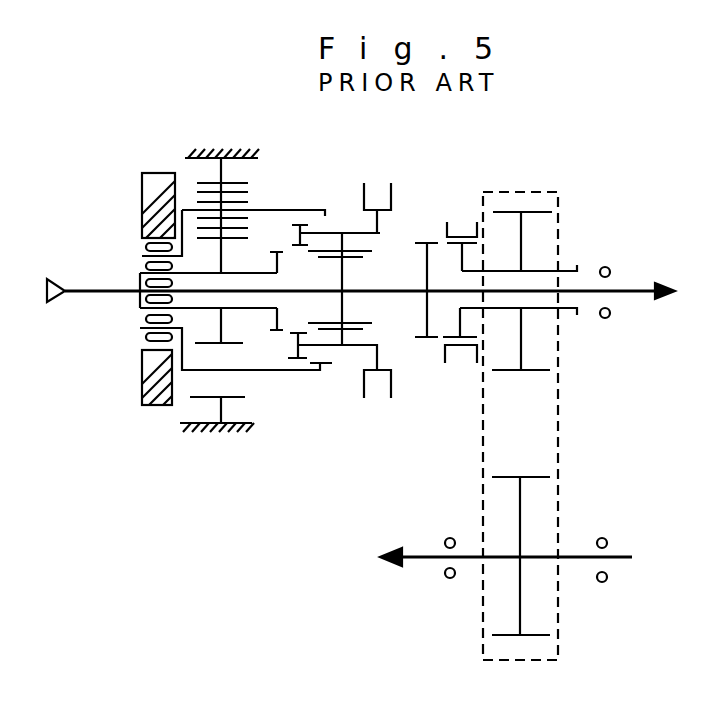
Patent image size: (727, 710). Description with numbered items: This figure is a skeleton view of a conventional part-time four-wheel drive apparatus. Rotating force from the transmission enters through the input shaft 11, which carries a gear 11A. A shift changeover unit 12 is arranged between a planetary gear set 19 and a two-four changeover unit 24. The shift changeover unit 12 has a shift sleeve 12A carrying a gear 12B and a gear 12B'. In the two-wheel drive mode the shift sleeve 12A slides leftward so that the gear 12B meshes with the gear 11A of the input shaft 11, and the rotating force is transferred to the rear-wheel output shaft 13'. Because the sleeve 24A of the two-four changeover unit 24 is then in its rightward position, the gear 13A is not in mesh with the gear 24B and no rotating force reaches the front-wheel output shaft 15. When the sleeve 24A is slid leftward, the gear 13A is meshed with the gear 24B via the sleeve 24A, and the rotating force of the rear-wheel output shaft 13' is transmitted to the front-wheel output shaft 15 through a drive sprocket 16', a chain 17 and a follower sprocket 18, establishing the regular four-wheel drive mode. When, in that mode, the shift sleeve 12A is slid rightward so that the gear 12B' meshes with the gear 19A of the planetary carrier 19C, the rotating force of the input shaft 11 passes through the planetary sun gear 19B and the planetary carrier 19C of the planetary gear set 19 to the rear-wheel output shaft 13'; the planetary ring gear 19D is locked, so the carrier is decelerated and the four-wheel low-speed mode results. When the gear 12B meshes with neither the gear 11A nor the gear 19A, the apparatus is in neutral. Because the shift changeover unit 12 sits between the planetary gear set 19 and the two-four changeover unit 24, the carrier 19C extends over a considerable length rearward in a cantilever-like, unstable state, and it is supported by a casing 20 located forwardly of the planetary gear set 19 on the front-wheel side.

The input shaft 11 is at (99, 287).
The gear of the input shaft 11A is at (292, 226).
The shift changeover unit 12 is at (354, 267).
The shift sleeve 12A is at (352, 230).
The gear of the shift sleeve 12B is at (297, 291).
The gear of the shift sleeve 12B' is at (253, 204).
The gear 13A is at (425, 236).
The rear-wheel output shaft 13' is at (359, 311).
The front-wheel output shaft 15 is at (470, 553).
The drive sprocket 16' is at (551, 268).
The chain 17 is at (557, 417).
The follower sprocket 18 is at (542, 642).
The planetary gear set 19 is at (206, 285).
The gear of the planetary carrier 19A is at (326, 217).
The planetary sun gear 19B is at (222, 261).
The planetary carrier 19C is at (257, 207).
The planetary ring gear 19D is at (222, 172).
The casing 20 is at (142, 209).
The 2-4 changeover unit 24 is at (490, 255).
The sleeve of the 2-4 changeover unit 24A is at (445, 225).
The gear 24B is at (450, 247).